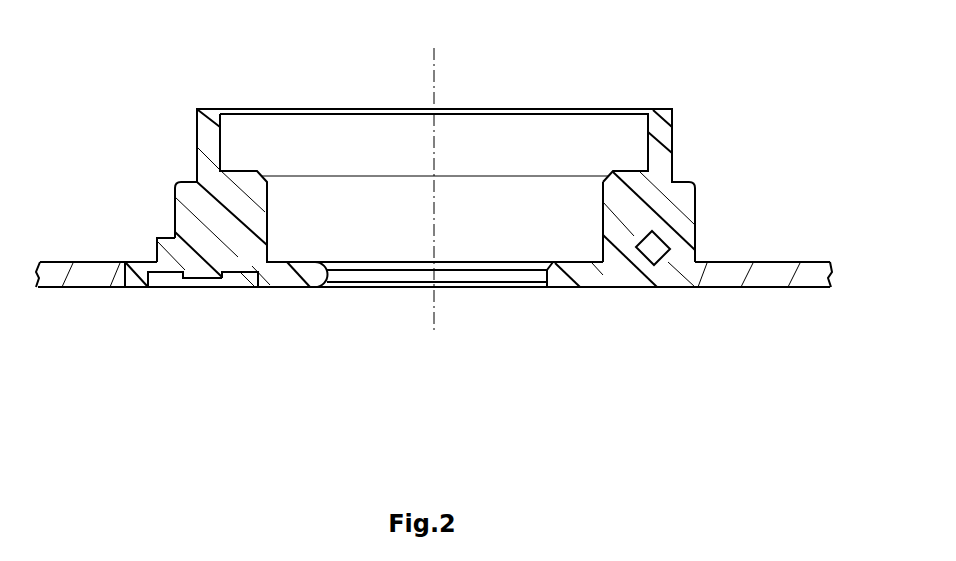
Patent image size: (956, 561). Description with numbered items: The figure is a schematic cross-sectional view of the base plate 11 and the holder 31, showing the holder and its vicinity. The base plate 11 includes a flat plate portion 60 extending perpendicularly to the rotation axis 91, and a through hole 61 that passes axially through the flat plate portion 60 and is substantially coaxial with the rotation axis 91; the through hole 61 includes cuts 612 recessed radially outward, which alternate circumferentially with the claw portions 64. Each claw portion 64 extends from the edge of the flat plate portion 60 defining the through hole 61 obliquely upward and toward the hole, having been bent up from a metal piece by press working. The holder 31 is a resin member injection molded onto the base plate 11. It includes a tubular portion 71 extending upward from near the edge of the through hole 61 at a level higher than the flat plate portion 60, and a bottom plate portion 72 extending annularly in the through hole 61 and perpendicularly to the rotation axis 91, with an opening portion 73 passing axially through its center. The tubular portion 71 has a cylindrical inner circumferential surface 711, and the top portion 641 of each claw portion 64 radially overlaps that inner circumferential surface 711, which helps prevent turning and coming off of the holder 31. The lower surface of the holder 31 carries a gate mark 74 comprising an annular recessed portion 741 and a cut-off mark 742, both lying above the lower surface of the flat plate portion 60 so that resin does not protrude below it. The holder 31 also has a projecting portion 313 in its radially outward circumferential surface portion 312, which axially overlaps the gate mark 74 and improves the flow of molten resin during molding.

The holder 31 is at (376, 160).
The circumferential surface portion 312 is at (170, 205).
The projecting portion 313 is at (156, 243).
The cut 612 is at (139, 284).
The cut-off mark 742 is at (198, 289).
The recessed portion 741 is at (238, 289).
The gate mark 74 is at (228, 366).
The tubular portion 71 is at (232, 193).
The inner circumferential surface 711 is at (600, 241).
The bottom plate portion 72 is at (305, 272).
The opening portion 73 is at (512, 276).
The rotation axis 91 is at (430, 76).
The top portion 641 is at (643, 240).
The claw portion 64 is at (640, 173).
The base plate 11 is at (745, 259).
The flat plate portion 60 is at (771, 276).
The through hole 61 is at (613, 272).